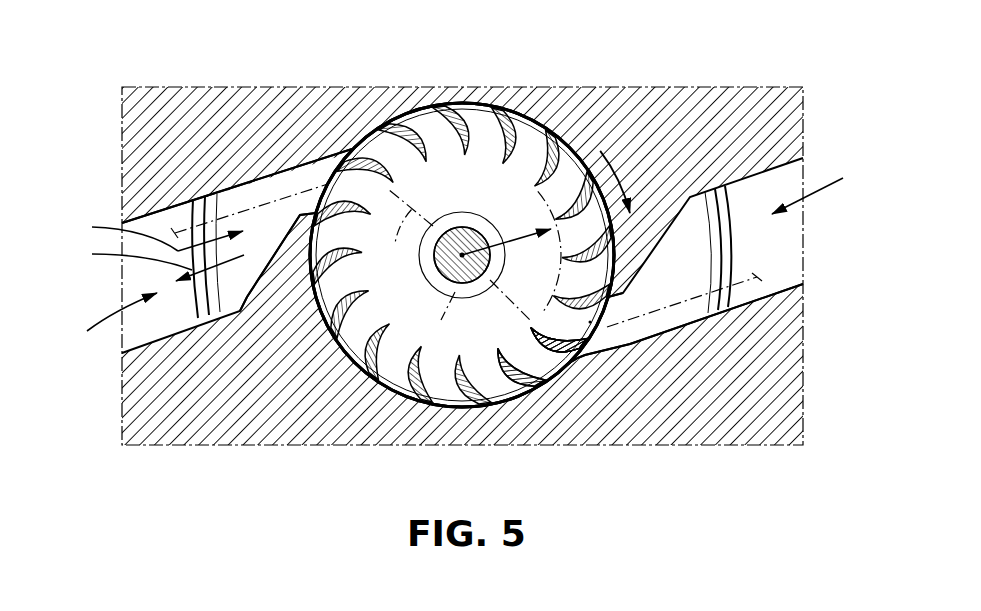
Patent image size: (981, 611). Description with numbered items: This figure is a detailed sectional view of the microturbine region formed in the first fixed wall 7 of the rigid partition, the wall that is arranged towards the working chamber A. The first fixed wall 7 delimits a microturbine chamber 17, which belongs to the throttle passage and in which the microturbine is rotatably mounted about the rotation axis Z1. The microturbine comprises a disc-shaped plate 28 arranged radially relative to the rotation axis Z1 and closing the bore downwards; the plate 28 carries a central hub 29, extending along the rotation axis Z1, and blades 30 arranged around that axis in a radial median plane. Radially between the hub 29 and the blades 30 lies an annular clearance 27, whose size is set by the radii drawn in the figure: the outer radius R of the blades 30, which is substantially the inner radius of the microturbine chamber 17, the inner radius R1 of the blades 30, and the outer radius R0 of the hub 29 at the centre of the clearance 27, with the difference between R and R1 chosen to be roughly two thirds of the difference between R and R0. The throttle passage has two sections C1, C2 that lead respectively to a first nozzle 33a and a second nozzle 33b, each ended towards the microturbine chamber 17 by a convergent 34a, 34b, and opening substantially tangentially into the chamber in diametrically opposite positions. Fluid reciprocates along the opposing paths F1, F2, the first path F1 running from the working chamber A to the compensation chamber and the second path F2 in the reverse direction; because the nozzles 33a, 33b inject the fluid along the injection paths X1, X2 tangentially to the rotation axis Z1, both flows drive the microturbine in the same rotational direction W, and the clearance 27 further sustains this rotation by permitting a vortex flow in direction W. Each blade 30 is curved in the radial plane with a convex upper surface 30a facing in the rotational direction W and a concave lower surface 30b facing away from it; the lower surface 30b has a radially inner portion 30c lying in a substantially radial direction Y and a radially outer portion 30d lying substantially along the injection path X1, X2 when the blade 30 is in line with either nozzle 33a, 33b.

The first fixed wall 7 is at (787, 115).
The microturbine chamber 17 is at (472, 234).
The annular clearance 27 is at (347, 357).
The disc-shaped plate 28 is at (600, 322).
The hub 29 is at (516, 110).
The blades 30 is at (459, 116).
The convex upper surface 30a is at (578, 332).
The concave lower surface 30b is at (582, 334).
The radially inner portion 30c is at (560, 354).
The radially outer portion 30d is at (594, 328).
The first nozzle 33a is at (136, 328).
The second nozzle 33b is at (777, 262).
The convergent 34a is at (299, 180).
The convergent 34b is at (633, 338).
The hub outer radius R0 is at (452, 224).
The blade inner radius R1 is at (511, 252).
The blade outer radius R is at (539, 106).
The rotational direction W is at (620, 163).
The first section of throttle passage C1 is at (107, 323).
The second section of throttle passage C2 is at (822, 191).
The first injection path X1 is at (175, 233).
The second injection path X2 is at (757, 277).
The first path F1 is at (150, 232).
The second path F2 is at (151, 262).
The radial direction Y is at (407, 227).
The rotation axis Z1 is at (479, 311).
The working chamber A is at (579, 335).